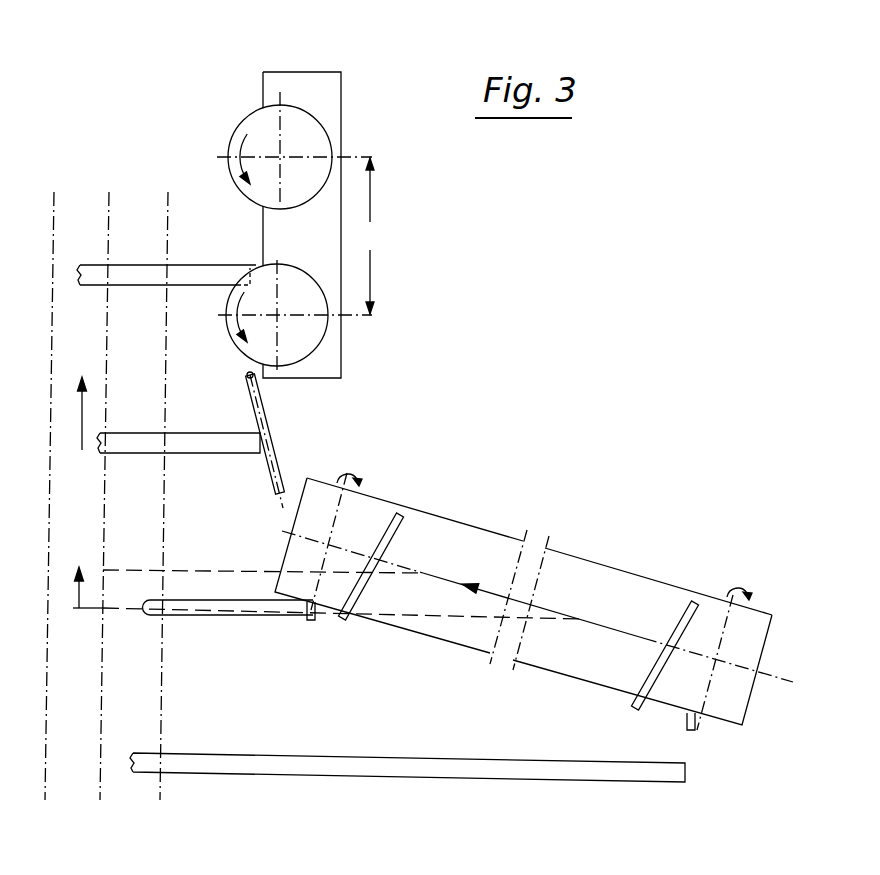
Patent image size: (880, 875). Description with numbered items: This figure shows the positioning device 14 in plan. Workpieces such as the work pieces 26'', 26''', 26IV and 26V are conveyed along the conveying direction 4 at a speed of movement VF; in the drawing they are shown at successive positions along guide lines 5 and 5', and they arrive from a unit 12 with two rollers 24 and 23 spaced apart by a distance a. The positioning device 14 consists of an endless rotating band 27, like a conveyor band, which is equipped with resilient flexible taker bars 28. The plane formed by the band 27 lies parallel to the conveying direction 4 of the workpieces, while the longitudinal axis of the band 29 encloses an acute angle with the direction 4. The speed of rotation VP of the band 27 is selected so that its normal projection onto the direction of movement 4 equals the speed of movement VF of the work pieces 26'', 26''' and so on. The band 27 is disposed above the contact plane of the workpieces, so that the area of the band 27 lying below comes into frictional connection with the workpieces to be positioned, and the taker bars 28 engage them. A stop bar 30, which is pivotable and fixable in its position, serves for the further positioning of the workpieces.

The roller unit 12 is at (332, 64).
The upper roller 24 is at (262, 127).
The lower roller 23 is at (308, 338).
The roller spacing a is at (369, 236).
The reference plane line 5 is at (123, 481).
The reference plane line 5' is at (123, 481).
The sheet 26V is at (193, 272).
The sheet 26IV is at (188, 432).
The work piece 26''' is at (228, 573).
The work piece 26'' is at (407, 744).
The conveying direction 4 is at (85, 410).
The speed of movement of the workpieces VF is at (68, 587).
The stop bar 30 is at (264, 410).
The positioning device 14 is at (480, 483).
The endless rotating band 27 is at (597, 570).
The longitudinal axis of the band 29 is at (643, 636).
The speed of rotation of the band VP is at (469, 575).
The resilient flexible taker bar 28 is at (400, 512).